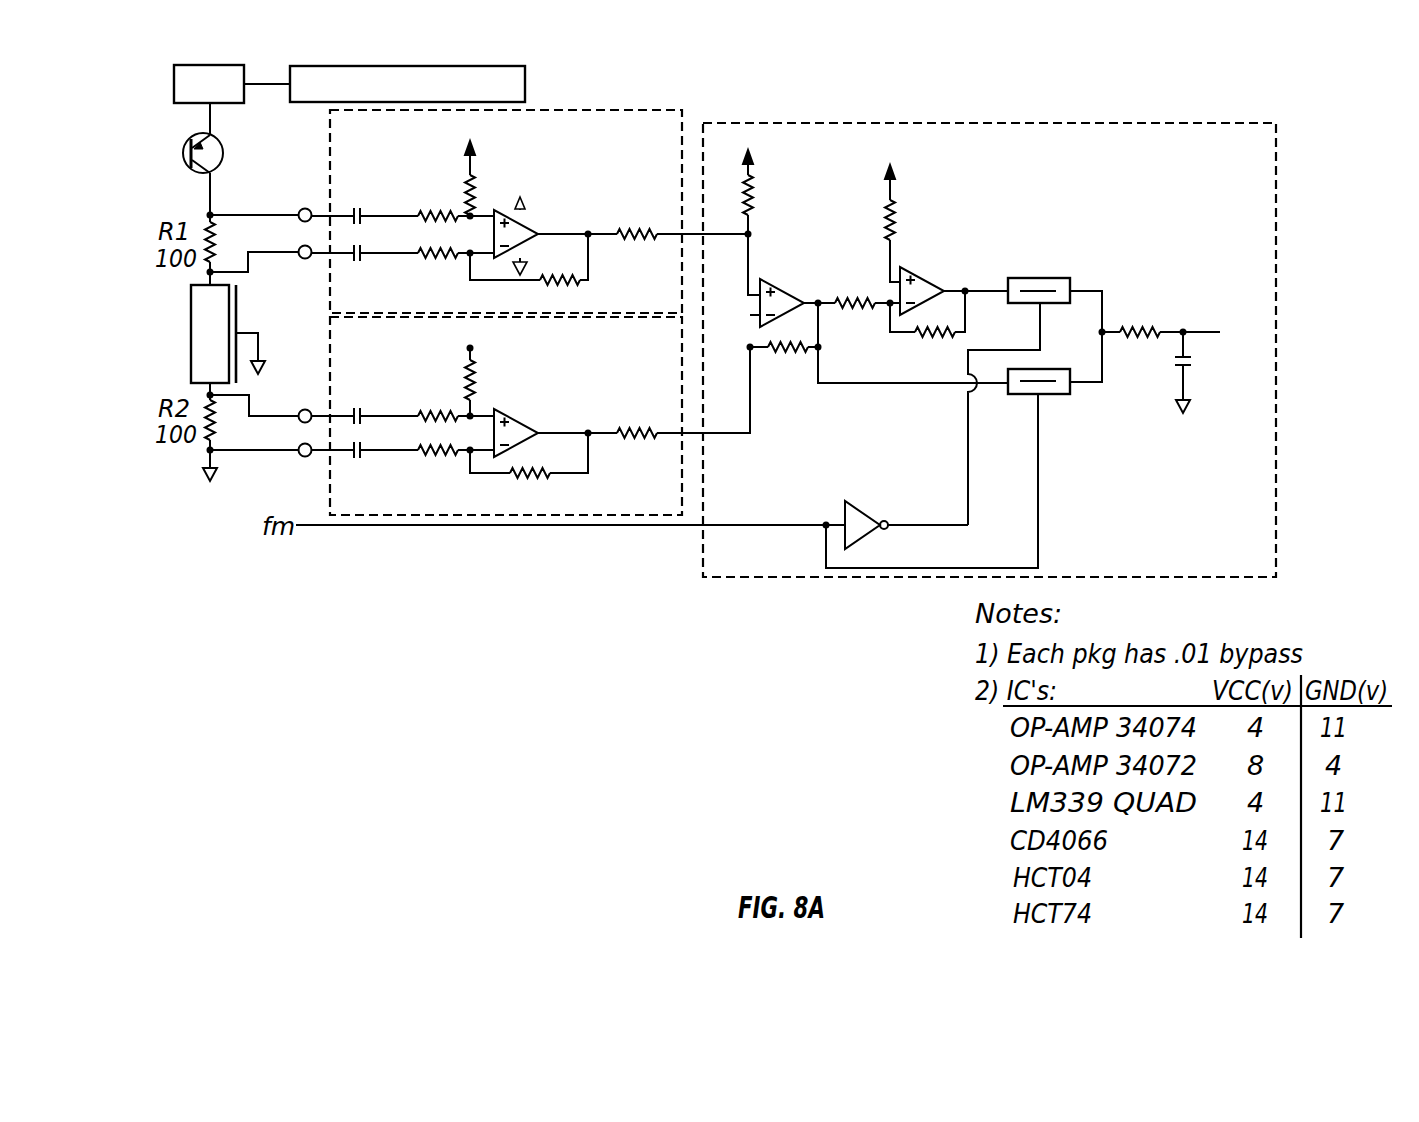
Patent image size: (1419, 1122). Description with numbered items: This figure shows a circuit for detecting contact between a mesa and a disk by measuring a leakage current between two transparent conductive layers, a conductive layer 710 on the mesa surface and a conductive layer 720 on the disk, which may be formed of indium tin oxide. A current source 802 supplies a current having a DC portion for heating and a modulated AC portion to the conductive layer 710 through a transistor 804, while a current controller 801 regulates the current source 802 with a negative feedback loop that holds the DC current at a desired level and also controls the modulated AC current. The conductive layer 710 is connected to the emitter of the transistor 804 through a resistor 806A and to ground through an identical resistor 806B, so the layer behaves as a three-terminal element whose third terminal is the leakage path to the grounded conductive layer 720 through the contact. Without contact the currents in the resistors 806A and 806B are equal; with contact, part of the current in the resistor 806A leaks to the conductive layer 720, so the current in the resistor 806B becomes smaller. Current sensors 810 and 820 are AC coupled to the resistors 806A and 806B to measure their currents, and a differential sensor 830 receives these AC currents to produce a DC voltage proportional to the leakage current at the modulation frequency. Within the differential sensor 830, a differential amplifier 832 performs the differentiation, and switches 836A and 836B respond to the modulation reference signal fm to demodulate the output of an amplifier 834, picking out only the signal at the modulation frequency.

The current controller 801 is at (488, 66).
The current source 802 is at (229, 98).
The transistor 804 is at (187, 137).
The resistor 806A is at (207, 230).
The resistor 806B is at (208, 436).
The conductive layer 710 is at (191, 325).
The conductive layer 720 is at (238, 322).
The current sensor 810 is at (378, 143).
The current sensor 820 is at (667, 355).
The differential sensor 830 is at (1215, 192).
The differential amplifier 832 is at (762, 280).
The amplifier 834 is at (945, 289).
The switch 836A is at (1067, 278).
The switch 836B is at (1062, 394).